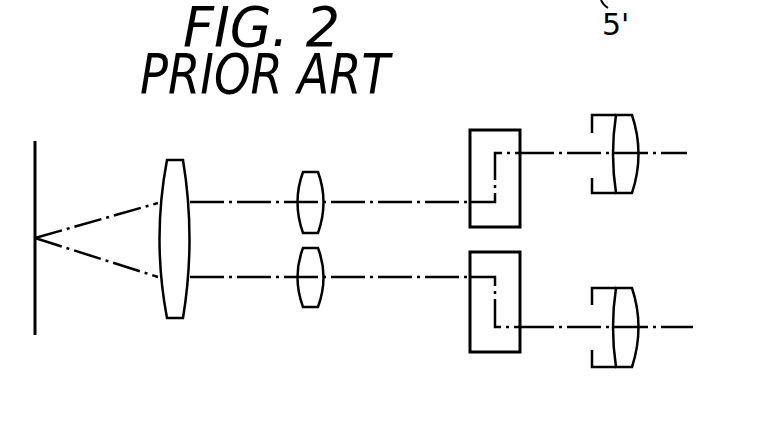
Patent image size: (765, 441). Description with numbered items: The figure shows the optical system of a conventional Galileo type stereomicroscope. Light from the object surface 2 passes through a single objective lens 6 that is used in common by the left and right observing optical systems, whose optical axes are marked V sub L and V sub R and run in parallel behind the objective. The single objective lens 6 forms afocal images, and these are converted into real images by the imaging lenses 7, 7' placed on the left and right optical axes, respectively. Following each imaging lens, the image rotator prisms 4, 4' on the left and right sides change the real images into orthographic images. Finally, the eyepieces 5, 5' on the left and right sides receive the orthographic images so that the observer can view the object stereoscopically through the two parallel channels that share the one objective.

The object surface 2 is at (35, 152).
The single objective lens 6 is at (175, 160).
The imaging lens 7 is at (315, 174).
The imaging lens 7' is at (319, 306).
The image rotator prism 4 is at (495, 148).
The image rotator prism 4' is at (500, 331).
The eyepiece 5 is at (615, 129).
The eyepiece 5' is at (618, 356).